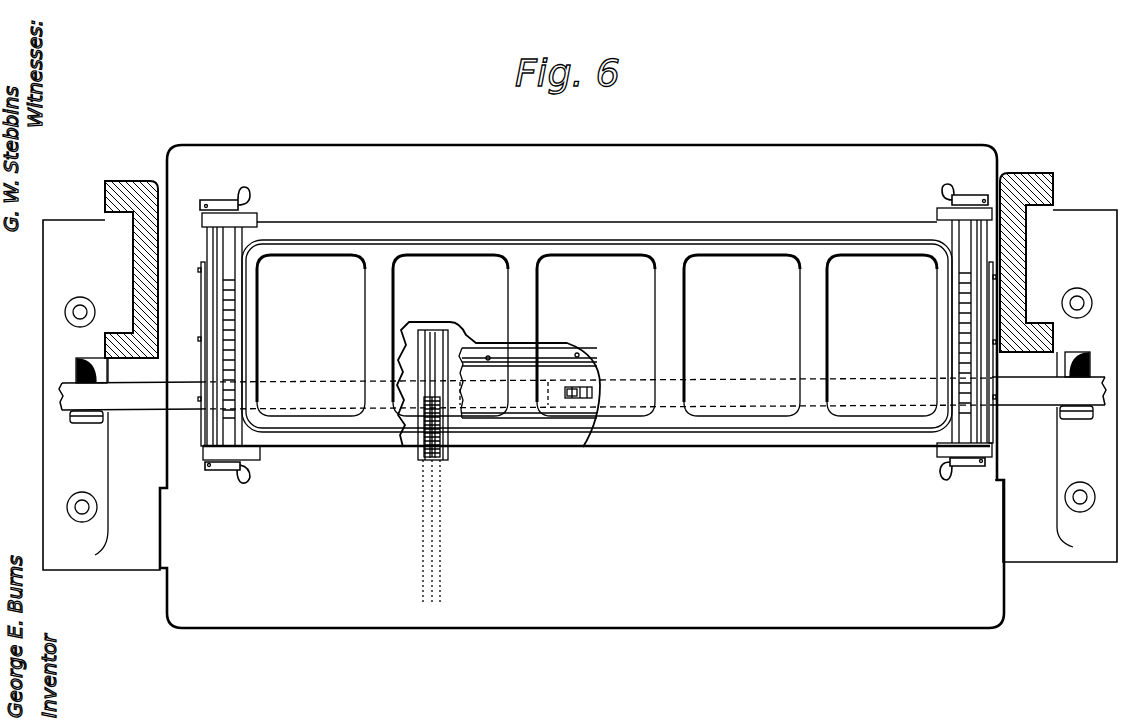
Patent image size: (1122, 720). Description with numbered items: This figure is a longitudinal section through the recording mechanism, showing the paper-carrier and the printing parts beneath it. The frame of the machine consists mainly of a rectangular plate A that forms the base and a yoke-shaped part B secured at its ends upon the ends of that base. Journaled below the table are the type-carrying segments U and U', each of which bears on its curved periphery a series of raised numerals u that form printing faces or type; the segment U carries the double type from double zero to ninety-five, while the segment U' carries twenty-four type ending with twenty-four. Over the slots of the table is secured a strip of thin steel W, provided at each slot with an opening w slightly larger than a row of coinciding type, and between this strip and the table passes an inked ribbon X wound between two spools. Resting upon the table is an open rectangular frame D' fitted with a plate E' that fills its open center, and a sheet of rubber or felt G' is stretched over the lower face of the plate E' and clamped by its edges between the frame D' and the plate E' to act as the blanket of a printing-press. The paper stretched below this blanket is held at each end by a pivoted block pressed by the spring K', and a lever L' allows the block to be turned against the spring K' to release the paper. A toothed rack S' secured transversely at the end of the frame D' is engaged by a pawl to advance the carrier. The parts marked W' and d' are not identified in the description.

The rectangular plate A is at (582, 386).
The yoke-shaped part B is at (140, 302).
The inked ribbon X is at (148, 409).
The spring K' is at (604, 354).
The lever L' is at (594, 335).
The toothed rack S' is at (597, 333).
The plate E' is at (597, 339).
The open rectangular frame D' is at (597, 329).
The elastic sheet G' is at (597, 335).
The segment U is at (508, 378).
The segment U' is at (498, 367).
The strip of thin steel W is at (575, 427).
The slide plate W' is at (528, 383).
The opening w is at (594, 388).
The numerals u is at (421, 448).
The rail end d' is at (605, 444).